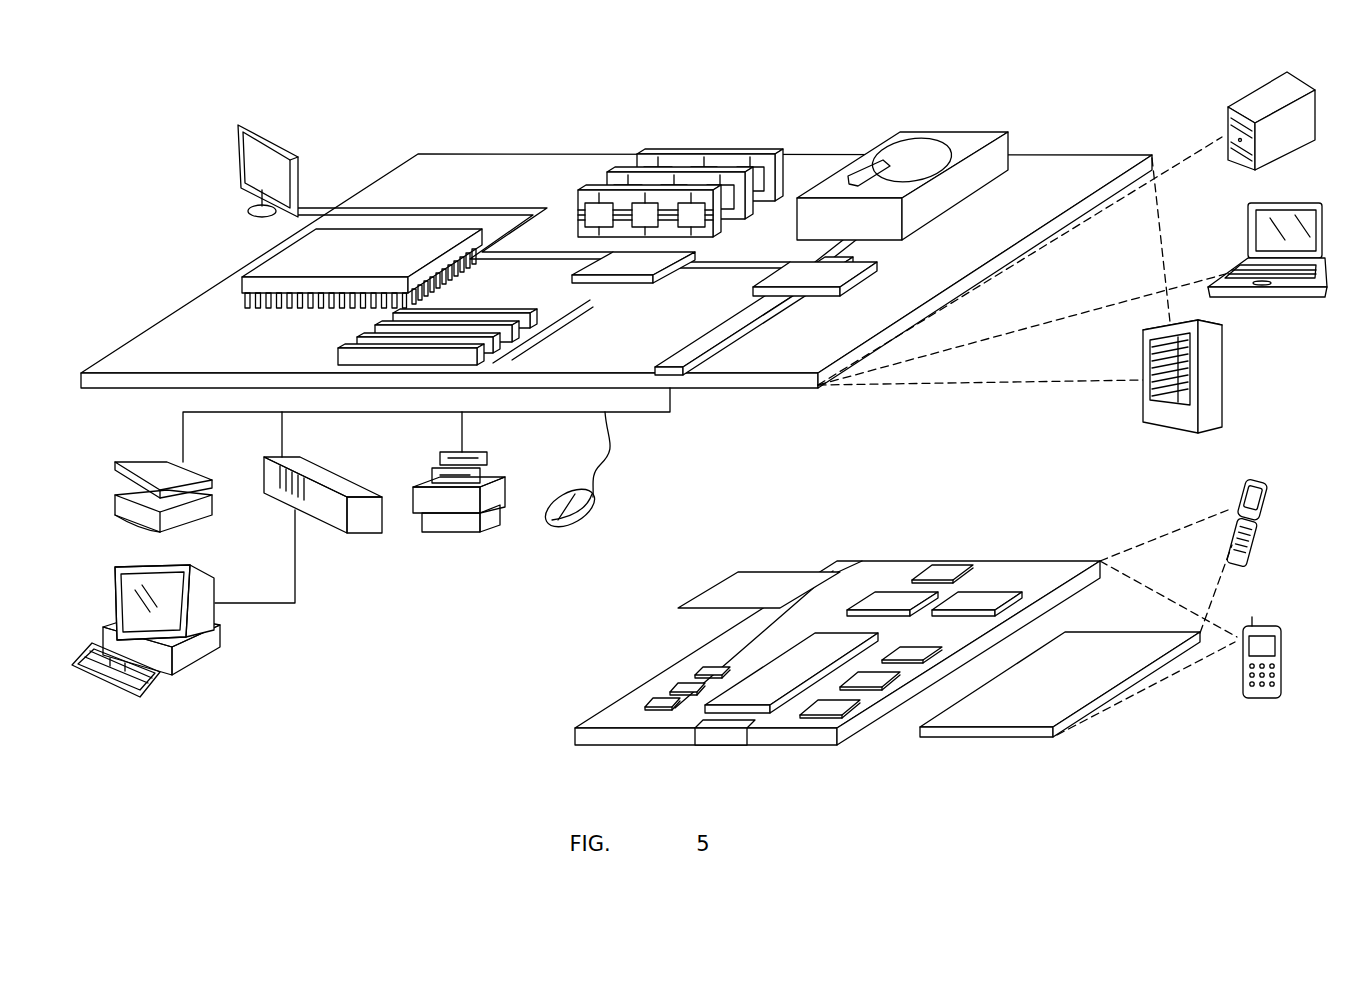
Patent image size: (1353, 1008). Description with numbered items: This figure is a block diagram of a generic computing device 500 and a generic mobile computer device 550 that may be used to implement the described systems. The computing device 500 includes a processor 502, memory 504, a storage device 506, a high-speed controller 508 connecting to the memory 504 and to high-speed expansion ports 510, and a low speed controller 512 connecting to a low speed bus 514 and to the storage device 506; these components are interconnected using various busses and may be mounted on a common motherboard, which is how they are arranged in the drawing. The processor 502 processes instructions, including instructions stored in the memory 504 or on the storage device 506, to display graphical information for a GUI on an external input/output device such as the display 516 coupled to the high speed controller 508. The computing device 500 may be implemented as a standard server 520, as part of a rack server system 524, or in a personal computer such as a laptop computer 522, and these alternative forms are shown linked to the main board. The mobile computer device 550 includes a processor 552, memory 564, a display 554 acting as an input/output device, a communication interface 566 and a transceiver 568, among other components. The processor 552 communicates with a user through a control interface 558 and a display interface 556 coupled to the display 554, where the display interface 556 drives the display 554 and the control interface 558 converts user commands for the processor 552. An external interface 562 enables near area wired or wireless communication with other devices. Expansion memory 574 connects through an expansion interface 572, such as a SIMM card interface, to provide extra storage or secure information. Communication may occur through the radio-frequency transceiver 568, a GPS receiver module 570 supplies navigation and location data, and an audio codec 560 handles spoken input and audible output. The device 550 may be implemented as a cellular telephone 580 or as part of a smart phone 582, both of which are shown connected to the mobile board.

The computing device 500 is at (367, 97).
The processor 502 is at (268, 259).
The memory 504 is at (711, 146).
The storage device 506 is at (945, 130).
The high-speed controller 508 is at (644, 262).
The high-speed expansion ports 510 is at (365, 336).
The low speed controller 512 is at (790, 266).
The low speed bus 514 is at (675, 357).
The display 516 is at (245, 125).
The standard server 520 is at (1247, 102).
The laptop computer 522 is at (1302, 202).
The rack server system 524 is at (1222, 377).
The mobile computer device 550 is at (530, 755).
The processor 552 is at (758, 680).
The display 554 is at (1100, 640).
The display interface 556 is at (838, 704).
The control interface 558 is at (877, 677).
The audio codec 560 is at (902, 650).
The external interface 562 is at (722, 745).
The memory 564 is at (675, 683).
The communication interface 566 is at (893, 592).
The transceiver 568 is at (985, 592).
The GPS receiver module 570 is at (943, 570).
The expansion interface 572 is at (815, 572).
The expansion memory 574 is at (736, 572).
The cellular telephone 580 is at (1235, 482).
The smart phone 582 is at (1262, 626).